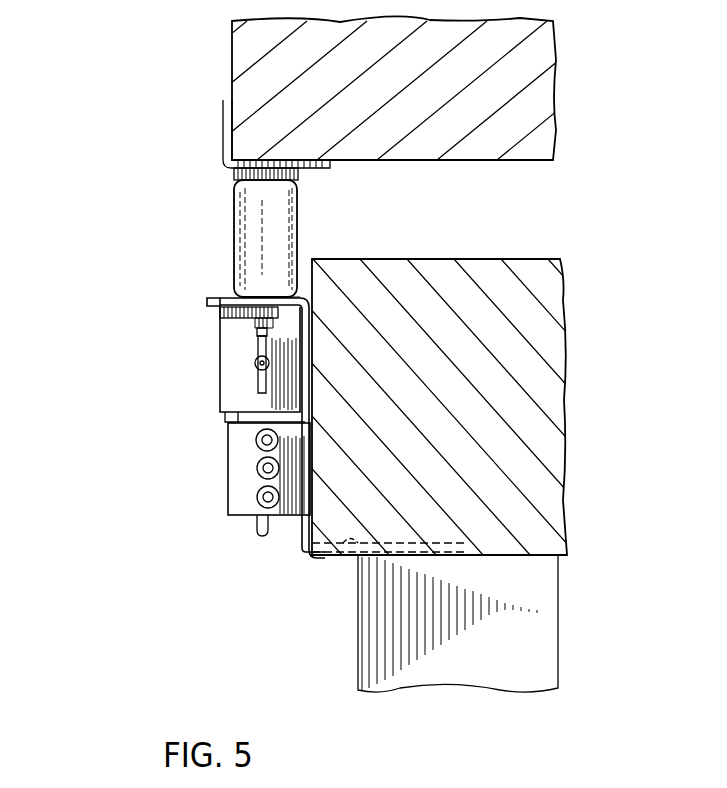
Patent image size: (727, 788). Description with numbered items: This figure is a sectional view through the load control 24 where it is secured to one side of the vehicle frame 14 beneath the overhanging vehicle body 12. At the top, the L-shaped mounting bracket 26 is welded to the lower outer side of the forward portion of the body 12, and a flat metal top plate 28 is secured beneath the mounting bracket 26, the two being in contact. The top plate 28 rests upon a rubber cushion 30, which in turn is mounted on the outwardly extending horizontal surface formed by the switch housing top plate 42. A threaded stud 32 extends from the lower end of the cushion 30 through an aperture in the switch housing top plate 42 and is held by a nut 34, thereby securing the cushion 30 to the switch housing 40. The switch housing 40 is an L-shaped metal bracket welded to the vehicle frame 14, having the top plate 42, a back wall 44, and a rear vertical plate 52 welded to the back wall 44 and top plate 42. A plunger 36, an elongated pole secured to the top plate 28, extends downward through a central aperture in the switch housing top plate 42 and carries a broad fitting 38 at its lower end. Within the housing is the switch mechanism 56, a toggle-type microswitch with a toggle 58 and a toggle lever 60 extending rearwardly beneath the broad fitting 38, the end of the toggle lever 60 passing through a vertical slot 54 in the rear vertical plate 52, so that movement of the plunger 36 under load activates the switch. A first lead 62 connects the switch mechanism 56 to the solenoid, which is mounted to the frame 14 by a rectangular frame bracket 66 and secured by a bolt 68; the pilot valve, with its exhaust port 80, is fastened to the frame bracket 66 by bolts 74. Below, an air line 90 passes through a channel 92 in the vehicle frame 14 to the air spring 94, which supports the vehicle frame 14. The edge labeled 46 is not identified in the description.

The body 12 is at (548, 100).
The vehicle frame 14 is at (560, 412).
The load control 24 is at (150, 312).
The mounting bracket 26 is at (225, 145).
The top plate 28 is at (236, 176).
The rubber cushions 30 is at (245, 236).
The threaded stud 32 is at (236, 313).
The nut 34 is at (215, 305).
The plunger 36 is at (250, 322).
The broad fitting 38 is at (258, 333).
The switch housing 40 is at (225, 289).
The switch housing top plate 42 is at (208, 298).
The back wall 44 is at (306, 327).
The contact edge 46 is at (270, 298).
The rear vertical plate 52 is at (228, 412).
The vertical slot 54 is at (228, 406).
The switch mechanism 56 is at (258, 355).
The toggle 58 is at (268, 375).
The toggle lever 60 is at (269, 364).
The first lead 62 is at (243, 428).
The frame bracket 66 is at (242, 488).
The bolt 68 is at (279, 440).
The bolts 74 is at (280, 497).
The exhaust port 80 is at (253, 532).
The air line 90 is at (350, 556).
The channel 92 is at (320, 556).
The air spring 94 is at (545, 650).